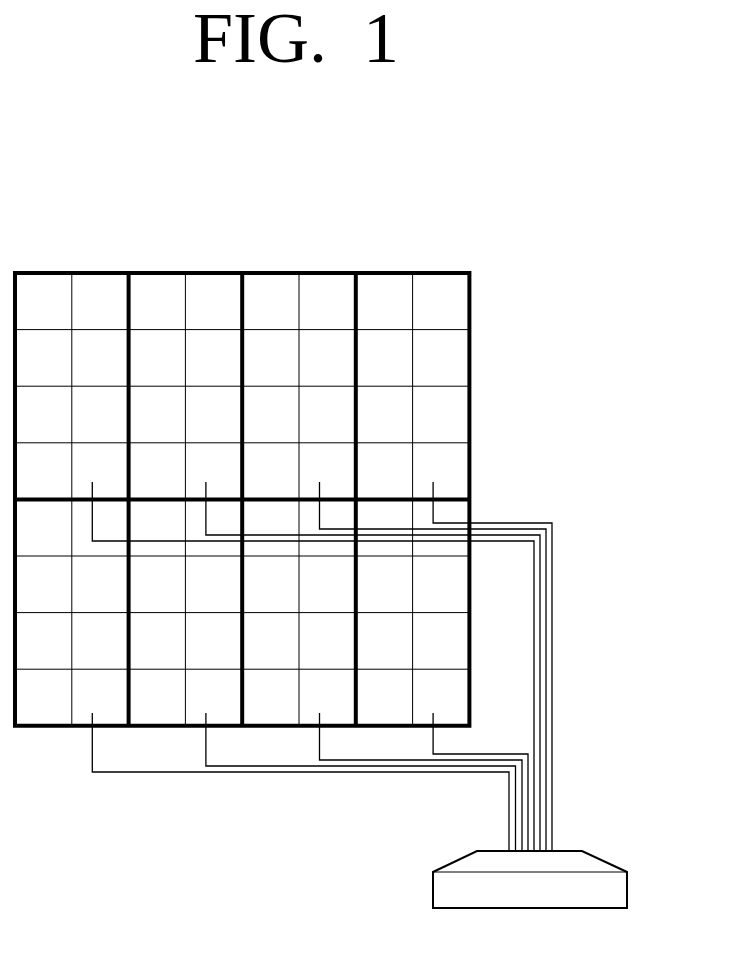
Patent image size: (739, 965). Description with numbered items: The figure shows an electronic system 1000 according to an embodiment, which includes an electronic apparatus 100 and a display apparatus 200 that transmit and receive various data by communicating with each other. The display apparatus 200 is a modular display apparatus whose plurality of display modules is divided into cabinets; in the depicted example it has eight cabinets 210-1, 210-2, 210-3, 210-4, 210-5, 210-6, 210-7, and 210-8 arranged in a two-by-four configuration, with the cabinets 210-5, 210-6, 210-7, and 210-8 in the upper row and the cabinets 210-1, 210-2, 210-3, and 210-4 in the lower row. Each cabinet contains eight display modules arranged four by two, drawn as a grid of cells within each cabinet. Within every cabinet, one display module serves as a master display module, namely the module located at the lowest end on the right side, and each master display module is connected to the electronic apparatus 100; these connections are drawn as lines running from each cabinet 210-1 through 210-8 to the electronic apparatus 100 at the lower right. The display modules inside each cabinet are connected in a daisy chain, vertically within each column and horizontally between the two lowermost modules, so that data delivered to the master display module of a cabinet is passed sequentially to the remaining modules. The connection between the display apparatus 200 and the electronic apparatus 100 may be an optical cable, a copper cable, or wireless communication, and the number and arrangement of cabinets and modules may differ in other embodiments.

The electronic system 1000 is at (268, 219).
The display apparatus 200 is at (490, 251).
The electronic apparatus 100 is at (433, 887).
The cabinet 210-1 is at (108, 713).
The cabinet 210-2 is at (222, 713).
The cabinet 210-3 is at (336, 713).
The cabinet 210-4 is at (449, 713).
The cabinet 210-5 is at (108, 482).
The cabinet 210-6 is at (222, 482).
The cabinet 210-7 is at (336, 482).
The cabinet 210-8 is at (449, 482).